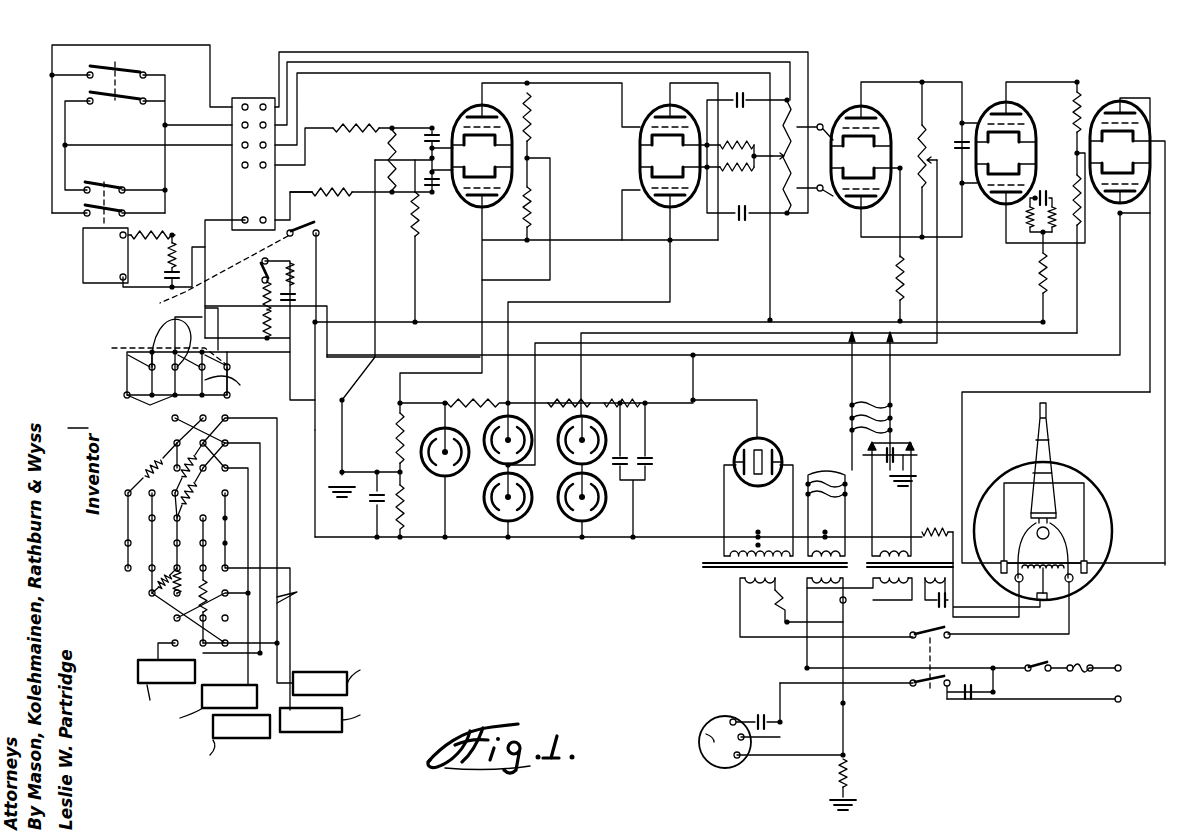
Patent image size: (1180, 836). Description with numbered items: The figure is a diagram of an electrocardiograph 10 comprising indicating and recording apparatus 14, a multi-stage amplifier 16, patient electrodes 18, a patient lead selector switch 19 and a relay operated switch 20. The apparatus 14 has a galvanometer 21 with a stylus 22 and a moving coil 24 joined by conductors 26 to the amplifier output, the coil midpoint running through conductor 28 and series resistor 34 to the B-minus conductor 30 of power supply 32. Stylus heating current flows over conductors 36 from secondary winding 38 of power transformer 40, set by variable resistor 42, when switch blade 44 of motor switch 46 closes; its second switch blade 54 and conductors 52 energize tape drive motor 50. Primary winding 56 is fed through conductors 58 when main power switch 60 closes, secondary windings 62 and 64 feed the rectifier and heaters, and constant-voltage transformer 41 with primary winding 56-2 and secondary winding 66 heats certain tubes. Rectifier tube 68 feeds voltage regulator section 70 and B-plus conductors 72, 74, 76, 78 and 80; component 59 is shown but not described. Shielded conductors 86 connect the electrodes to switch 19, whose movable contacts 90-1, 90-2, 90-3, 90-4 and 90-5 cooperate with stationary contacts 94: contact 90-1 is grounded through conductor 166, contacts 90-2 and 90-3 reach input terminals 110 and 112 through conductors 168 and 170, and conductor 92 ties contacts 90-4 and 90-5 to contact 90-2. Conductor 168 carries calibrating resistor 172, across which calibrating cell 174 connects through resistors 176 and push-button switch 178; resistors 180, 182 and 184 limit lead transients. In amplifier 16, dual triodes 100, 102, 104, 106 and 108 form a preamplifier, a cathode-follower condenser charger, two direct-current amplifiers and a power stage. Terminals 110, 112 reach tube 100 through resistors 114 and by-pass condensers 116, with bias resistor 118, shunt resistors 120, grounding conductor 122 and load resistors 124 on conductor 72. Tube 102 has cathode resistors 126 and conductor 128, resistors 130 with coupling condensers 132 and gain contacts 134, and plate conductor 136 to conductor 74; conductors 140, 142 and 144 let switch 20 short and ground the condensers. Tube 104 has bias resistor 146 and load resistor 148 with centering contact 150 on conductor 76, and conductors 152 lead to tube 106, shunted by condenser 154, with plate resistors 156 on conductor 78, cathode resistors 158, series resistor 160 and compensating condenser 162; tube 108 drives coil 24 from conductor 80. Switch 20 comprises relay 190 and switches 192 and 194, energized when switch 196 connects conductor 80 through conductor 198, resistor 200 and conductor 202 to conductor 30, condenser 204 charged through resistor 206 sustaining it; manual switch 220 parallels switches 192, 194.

The electrocardiograph 10 is at (553, 629).
The indicating and recording apparatus 14 is at (1064, 470).
The multi-stage amplifier 16 is at (614, 272).
The patient electrodes 18 is at (330, 662).
The patient lead selector switch 19 is at (179, 548).
The relay operated switch 20 is at (74, 251).
The galvanometer 21 is at (1095, 575).
The stylus 22 is at (1047, 456).
The galvanometer coil 24 is at (1055, 560).
The conductors 26 is at (1145, 398).
The conductor 28 is at (948, 609).
The B-minus conductor 30 is at (440, 322).
The power supply 32 is at (813, 448).
The series resistor 34 is at (937, 520).
The conductors 36 is at (1018, 635).
The secondary winding 38 is at (740, 590).
The power transformer 40 is at (817, 560).
The second transformer 41 is at (910, 554).
The variable resistor 42 is at (770, 604).
The switch blade 44 is at (923, 630).
The motor switch 46 is at (922, 646).
The tape drive motor 50 is at (708, 722).
The conductors 52 is at (844, 702).
The second switch blade 54 is at (946, 687).
The primary winding 56 is at (826, 665).
The primary winding 56-2 is at (877, 597).
The conductors 58 is at (810, 668).
The resistor 59 is at (855, 770).
The main power switch 60 is at (1040, 663).
The secondary winding 62 is at (742, 540).
The secondary winding 64 is at (820, 538).
The secondary winding 66 is at (878, 530).
The rectifier tube 68 is at (737, 444).
The voltage regulator section 70 is at (516, 468).
The B-plus conductor 72 is at (488, 378).
The plate voltage supply conductor 74 is at (512, 403).
The plate voltage supply conductor 76 is at (938, 275).
The plate voltage supply conductor 78 is at (1076, 305).
The plate voltage supply conductor 80 is at (395, 359).
The shielded conductors 86 is at (348, 595).
The movable ground contact 90-1 is at (227, 393).
The movable contact 90-2 is at (227, 380).
The movable contact 90-3 is at (161, 348).
The movable contact 90-4 is at (150, 355).
The movable contact 90-5 is at (122, 388).
The conductor 92 is at (149, 350).
The stationary contacts 94 is at (175, 418).
The dual triode 100 is at (470, 106).
The dual triode 102 is at (653, 110).
The dual triode 104 is at (855, 103).
The dual triode 106 is at (990, 102).
The dual triode 108 is at (1117, 103).
The input terminal 110 is at (253, 164).
The input terminal 112 is at (261, 218).
The resistors 114 is at (348, 136).
The by-pass condensers 116 is at (428, 132).
The common bias resistor 118 is at (420, 218).
The resistors 120 is at (398, 163).
The conductor 122 is at (342, 260).
The load resistors 124 is at (531, 124).
The cathode resistors 126 is at (725, 143).
The conductor 128 is at (770, 272).
The resistors 130 is at (800, 105).
The coupling condenser 132 is at (745, 90).
The adjustable contacts 134 is at (822, 194).
The conductor 136 is at (705, 248).
The conductor 140 is at (172, 46).
The conductor 142 is at (179, 122).
The conductor 144 is at (180, 150).
The bias resistor 146 is at (895, 268).
The load resistor 148 is at (913, 123).
The adjustable contact 150 is at (933, 211).
The conductors 152 is at (962, 137).
The condenser 154 is at (958, 82).
The plate resistors 156 is at (1075, 95).
The cathode resistors 158 is at (1050, 230).
The series resistor 160 is at (1040, 280).
The condenser 162 is at (1028, 228).
The conductor 166 is at (310, 420).
The conductor 168 is at (265, 295).
The conductor 170 is at (224, 273).
The calibrating resistor 172 is at (265, 326).
The standard calibrating cell 174 is at (298, 300).
The resistors 176 is at (293, 288).
The manually operable switch 178 is at (260, 260).
The resistance 180 is at (160, 451).
The resistor 182 is at (182, 488).
The balancing resistor 184 is at (181, 573).
The relay 190 is at (84, 281).
The normally open switch 192 is at (115, 186).
The normally open switch 194 is at (85, 182).
The switch 196 is at (318, 233).
The conductor 198 is at (189, 220).
The resistor 200 is at (168, 257).
The conductor 202 is at (313, 475).
The condenser 204 is at (153, 278).
The resistor 206 is at (152, 224).
The manually operable switch 220 is at (112, 67).